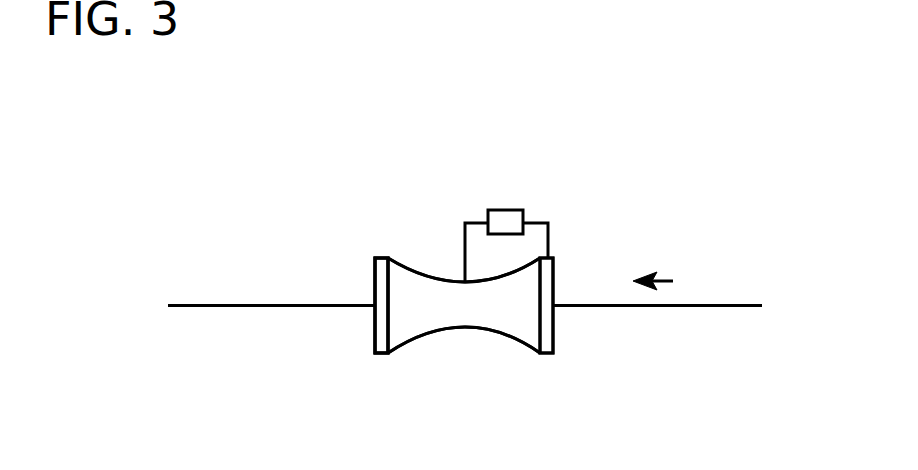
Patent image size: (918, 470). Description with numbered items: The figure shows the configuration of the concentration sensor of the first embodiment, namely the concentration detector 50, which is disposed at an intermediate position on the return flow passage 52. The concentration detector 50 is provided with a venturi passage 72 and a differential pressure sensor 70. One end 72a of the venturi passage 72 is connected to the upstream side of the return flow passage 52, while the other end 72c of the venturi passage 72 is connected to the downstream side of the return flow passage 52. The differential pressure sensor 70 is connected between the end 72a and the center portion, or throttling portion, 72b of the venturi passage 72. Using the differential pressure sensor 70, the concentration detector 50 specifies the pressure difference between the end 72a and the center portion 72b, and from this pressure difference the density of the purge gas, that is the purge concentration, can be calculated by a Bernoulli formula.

The concentration detector 50 is at (548, 198).
The return flow passage 52 is at (213, 305).
The differential pressure sensor 70 is at (507, 217).
The venturi passage 72 is at (542, 353).
The one end of the venturi passage 72a is at (506, 322).
The center portion (throttling portion) 72b is at (464, 305).
The another end of the venturi passage 72c is at (385, 335).